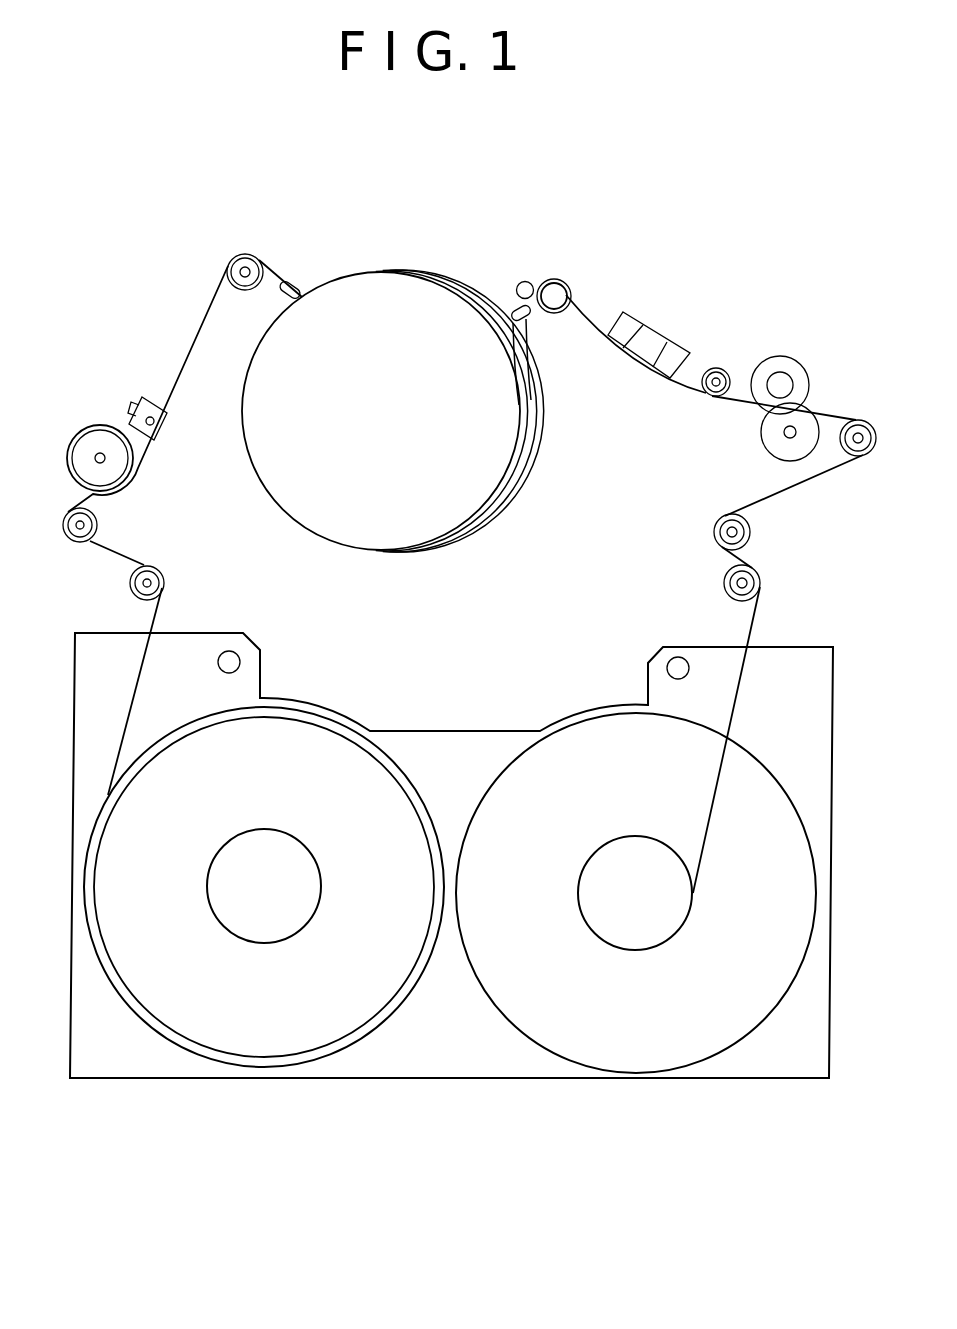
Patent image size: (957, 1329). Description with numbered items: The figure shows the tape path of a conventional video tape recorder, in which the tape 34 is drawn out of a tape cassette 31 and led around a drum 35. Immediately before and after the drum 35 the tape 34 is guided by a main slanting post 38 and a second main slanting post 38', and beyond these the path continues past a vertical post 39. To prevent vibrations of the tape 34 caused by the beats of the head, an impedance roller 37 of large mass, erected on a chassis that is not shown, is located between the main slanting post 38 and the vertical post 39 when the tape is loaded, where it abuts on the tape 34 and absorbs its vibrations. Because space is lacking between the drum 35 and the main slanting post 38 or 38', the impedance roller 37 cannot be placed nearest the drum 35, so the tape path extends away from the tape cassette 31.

The tape cassette 31 is at (470, 1078).
The tape 34 is at (593, 317).
The drum 35 is at (373, 272).
The impedance roller 37 is at (524, 281).
The main slanting post 38 is at (552, 356).
The main slanting post 38' is at (287, 247).
The vertical post 39 is at (557, 280).